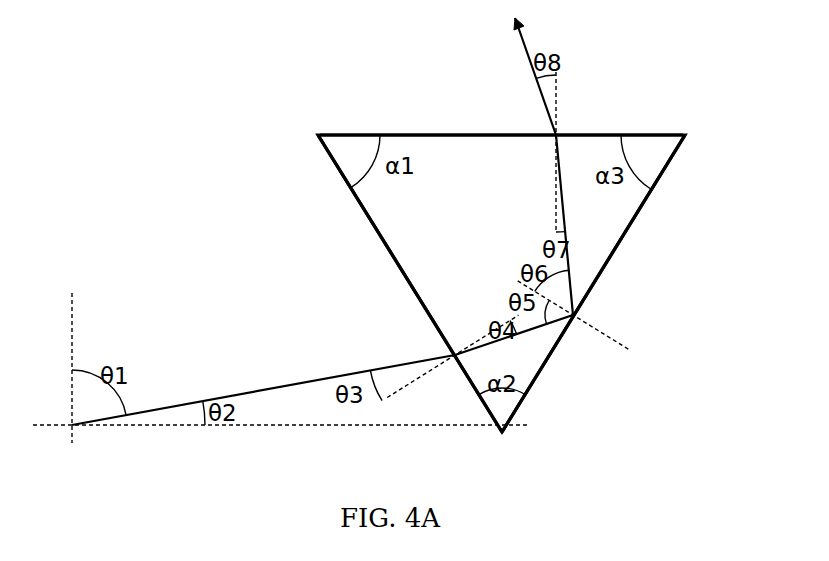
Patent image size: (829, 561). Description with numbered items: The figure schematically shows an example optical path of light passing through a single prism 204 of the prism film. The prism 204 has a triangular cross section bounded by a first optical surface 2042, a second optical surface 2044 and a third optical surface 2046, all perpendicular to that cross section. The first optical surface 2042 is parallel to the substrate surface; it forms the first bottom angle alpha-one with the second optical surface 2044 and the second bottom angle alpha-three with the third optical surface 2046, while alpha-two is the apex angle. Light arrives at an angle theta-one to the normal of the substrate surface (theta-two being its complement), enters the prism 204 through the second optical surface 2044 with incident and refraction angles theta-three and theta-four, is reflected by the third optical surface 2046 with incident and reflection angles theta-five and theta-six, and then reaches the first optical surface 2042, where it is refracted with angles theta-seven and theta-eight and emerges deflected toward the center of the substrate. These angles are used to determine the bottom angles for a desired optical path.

The prism 204 is at (437, 150).
The first optical surface 2042 is at (472, 135).
The second optical surface 2044 is at (388, 250).
The third optical surface 2046 is at (620, 240).